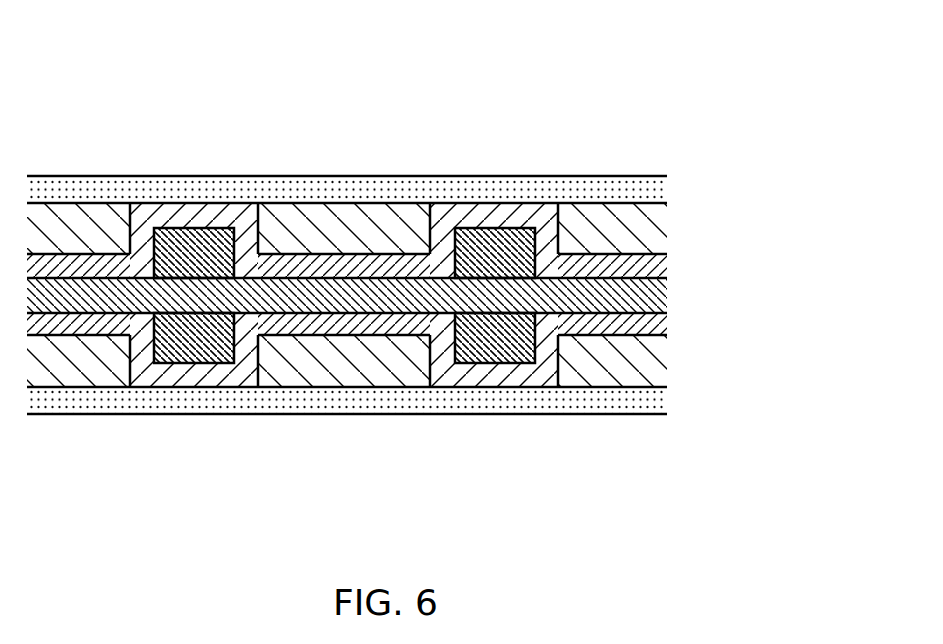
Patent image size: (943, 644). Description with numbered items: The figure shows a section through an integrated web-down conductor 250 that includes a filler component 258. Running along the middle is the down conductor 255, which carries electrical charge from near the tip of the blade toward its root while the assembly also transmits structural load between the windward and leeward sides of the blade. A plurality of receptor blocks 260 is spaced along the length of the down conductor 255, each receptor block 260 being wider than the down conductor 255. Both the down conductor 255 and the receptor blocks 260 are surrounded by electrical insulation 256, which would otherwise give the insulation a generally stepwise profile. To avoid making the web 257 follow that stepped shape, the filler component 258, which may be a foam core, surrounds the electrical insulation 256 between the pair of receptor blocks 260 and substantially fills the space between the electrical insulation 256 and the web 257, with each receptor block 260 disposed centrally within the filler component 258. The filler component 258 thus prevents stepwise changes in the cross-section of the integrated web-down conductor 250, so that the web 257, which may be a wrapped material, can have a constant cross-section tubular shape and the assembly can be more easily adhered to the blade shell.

The integrated web-down conductor 250 is at (423, 267).
The down conductor 255 is at (645, 297).
The electrical insulation 256 is at (314, 252).
The web 257 is at (38, 402).
The filler component 258 is at (67, 223).
The receptor block 260 is at (208, 243).